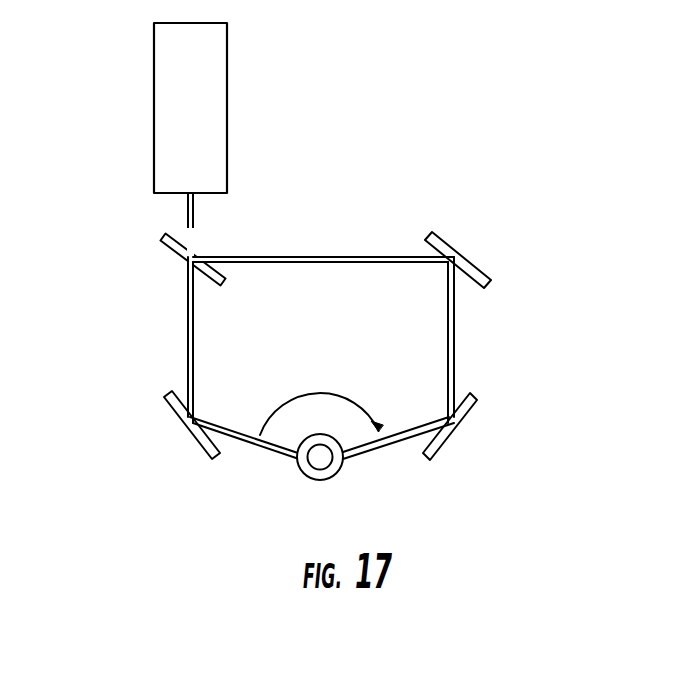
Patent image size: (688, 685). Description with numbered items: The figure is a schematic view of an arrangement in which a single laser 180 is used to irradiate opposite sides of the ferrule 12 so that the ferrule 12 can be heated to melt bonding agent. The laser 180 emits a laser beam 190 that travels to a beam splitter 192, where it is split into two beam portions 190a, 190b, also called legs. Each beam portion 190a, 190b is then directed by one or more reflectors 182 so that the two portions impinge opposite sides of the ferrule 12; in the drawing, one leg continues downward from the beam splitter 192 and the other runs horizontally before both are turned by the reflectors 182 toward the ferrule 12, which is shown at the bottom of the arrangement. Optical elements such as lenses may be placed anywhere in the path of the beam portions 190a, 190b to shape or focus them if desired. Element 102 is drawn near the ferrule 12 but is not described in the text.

The ferrule 12 is at (301, 468).
The rotatable mirror element 102 is at (328, 467).
The laser 180 is at (227, 91).
The reflector 182 is at (440, 237).
The laser beam 190 is at (187, 213).
The first beam portion 190a is at (187, 314).
The second beam portion 190b is at (310, 257).
The beam splitter 192 is at (160, 243).